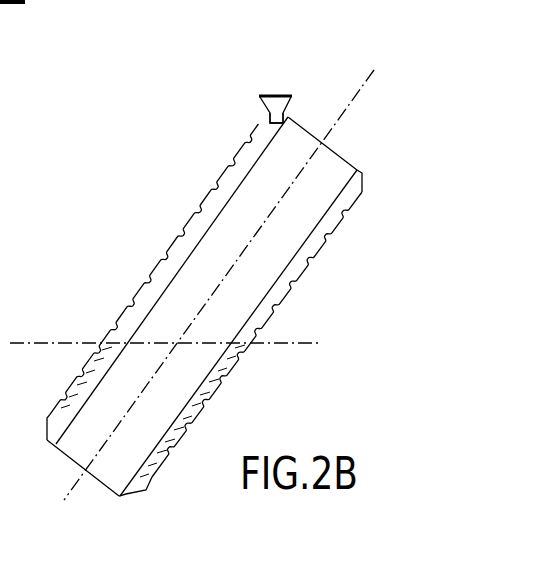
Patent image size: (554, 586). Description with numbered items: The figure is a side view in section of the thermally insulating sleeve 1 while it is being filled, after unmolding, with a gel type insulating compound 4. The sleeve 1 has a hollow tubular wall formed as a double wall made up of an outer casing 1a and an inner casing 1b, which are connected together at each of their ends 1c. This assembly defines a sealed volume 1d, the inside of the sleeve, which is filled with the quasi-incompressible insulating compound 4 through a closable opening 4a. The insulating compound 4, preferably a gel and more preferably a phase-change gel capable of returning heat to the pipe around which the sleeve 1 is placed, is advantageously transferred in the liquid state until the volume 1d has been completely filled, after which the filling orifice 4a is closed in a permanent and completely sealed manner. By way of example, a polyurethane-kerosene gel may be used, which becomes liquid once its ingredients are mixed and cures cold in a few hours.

The thermally insulating sleeve 1 is at (138, 180).
The outer casing 1a is at (247, 143).
The inner casing 1b is at (280, 137).
The ends 1c is at (358, 170).
The sealed volume 1d is at (297, 268).
The insulating compound 4 is at (274, 85).
The closable opening 4a is at (268, 123).